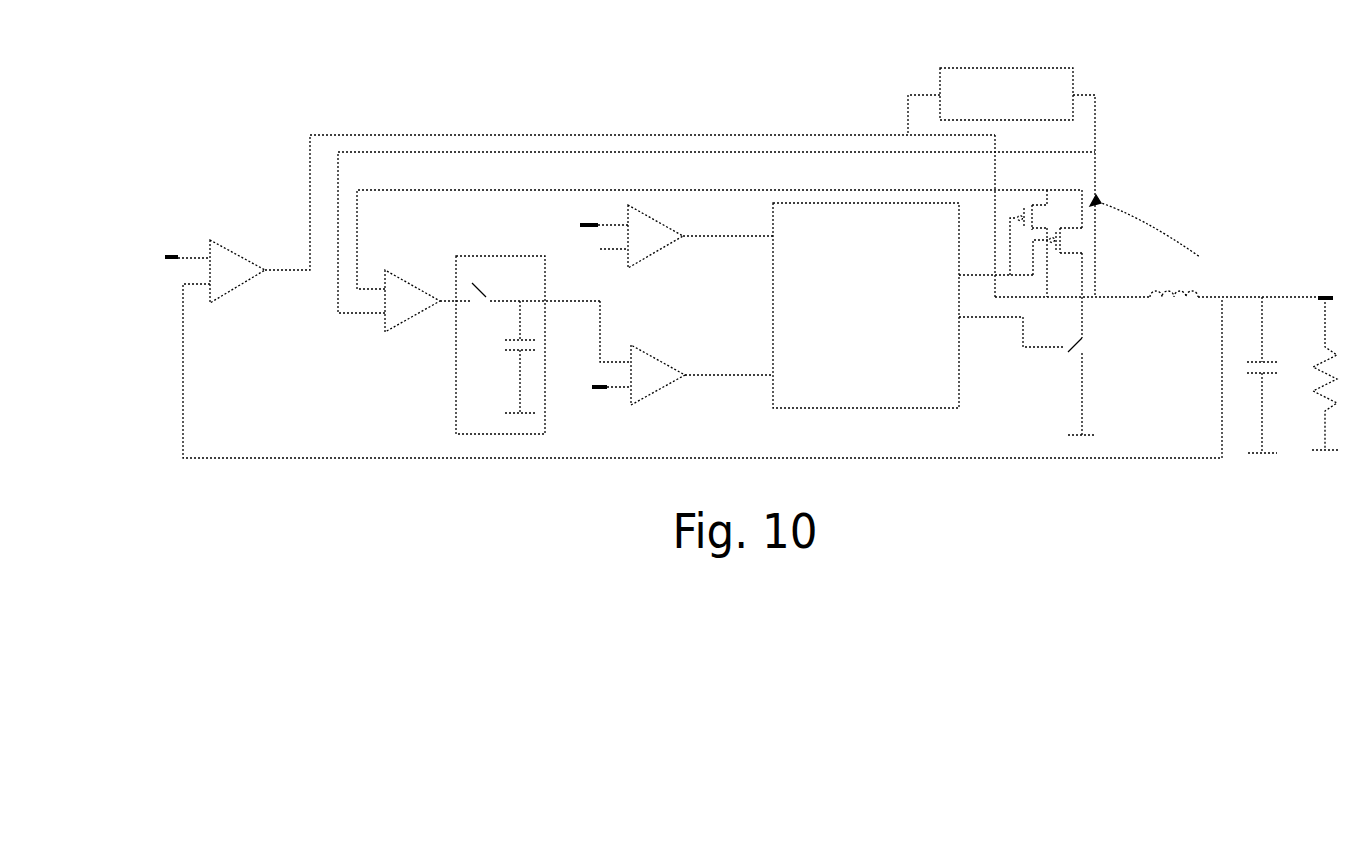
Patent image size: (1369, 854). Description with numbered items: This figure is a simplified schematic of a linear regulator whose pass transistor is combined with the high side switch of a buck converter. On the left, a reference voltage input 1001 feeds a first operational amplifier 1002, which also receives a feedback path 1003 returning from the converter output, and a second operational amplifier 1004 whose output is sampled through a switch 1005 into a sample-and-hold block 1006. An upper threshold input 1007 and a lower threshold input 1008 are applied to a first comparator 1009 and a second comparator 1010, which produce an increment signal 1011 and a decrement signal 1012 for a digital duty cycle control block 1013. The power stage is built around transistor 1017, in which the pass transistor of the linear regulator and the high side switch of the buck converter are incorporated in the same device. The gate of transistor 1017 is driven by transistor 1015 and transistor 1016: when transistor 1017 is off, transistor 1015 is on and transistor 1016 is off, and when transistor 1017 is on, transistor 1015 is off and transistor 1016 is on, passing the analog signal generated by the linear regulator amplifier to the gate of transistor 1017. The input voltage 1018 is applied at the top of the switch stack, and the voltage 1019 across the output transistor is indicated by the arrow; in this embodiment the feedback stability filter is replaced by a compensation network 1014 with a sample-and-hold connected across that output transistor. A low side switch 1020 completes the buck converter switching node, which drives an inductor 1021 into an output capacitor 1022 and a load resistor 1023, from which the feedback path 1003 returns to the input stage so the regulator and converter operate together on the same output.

The reference voltage input 1001 is at (190, 257).
The first operational amplifier 1002 is at (232, 262).
The feedback line 1003 is at (185, 394).
The second operational amplifier 1004 is at (390, 322).
The sample switch 1005 is at (483, 295).
The sample and hold circuit 1006 is at (500, 345).
The upper threshold voltage input 1007 is at (603, 225).
The lower threshold voltage input 1008 is at (612, 388).
The first comparator 1009 is at (655, 250).
The second comparator 1010 is at (655, 388).
The increment signal 1011 is at (715, 236).
The decrement signal 1012 is at (708, 377).
The digital duty cycle control 1013 is at (873, 252).
The compensation network 1014 is at (990, 72).
The transistor 1015 is at (1017, 232).
The transistor 1016 is at (1035, 278).
The transistor 1017 is at (1072, 258).
The input voltage 1018 is at (1068, 188).
The output voltage 1019 is at (1140, 228).
The low-side switch 1020 is at (1095, 355).
The inductor 1021 is at (1167, 310).
The output capacitor 1022 is at (1258, 372).
The load resistor 1023 is at (1320, 340).